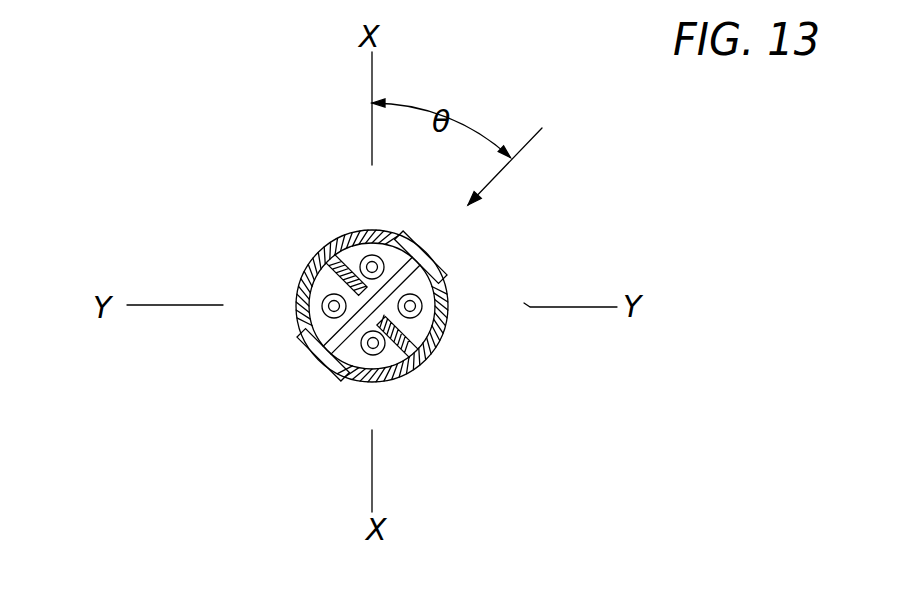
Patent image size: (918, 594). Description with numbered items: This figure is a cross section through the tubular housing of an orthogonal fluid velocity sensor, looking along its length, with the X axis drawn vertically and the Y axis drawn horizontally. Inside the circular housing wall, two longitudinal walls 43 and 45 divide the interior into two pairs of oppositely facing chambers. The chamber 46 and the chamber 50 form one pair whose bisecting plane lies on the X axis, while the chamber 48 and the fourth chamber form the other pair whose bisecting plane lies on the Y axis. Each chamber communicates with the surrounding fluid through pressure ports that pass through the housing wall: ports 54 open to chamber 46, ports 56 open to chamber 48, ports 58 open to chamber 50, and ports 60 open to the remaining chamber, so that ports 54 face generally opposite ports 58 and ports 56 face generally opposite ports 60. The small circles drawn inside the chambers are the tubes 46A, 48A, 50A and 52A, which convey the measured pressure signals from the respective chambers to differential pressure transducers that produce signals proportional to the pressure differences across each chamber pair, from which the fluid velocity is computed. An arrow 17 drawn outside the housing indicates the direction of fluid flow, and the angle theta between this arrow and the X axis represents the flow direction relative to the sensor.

The direction arrow 17 is at (516, 155).
The longitudinal wall 43 is at (312, 274).
The longitudinal wall 45 is at (421, 252).
The chamber 46 is at (348, 258).
The tube 46A is at (370, 255).
The chamber 48 is at (324, 348).
The tube 48A is at (322, 305).
The chamber 50 is at (378, 355).
The tube 50A is at (419, 364).
The tube 52A is at (423, 305).
The ports 54 is at (413, 186).
The ports 56 is at (314, 284).
The ports 58 is at (347, 383).
The ports 60 is at (442, 284).